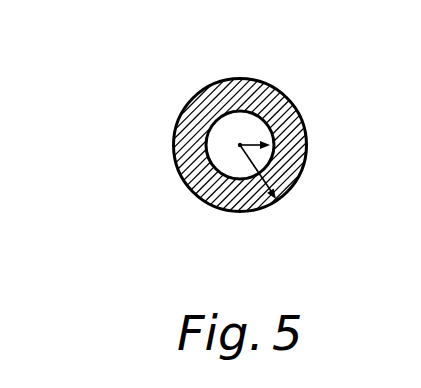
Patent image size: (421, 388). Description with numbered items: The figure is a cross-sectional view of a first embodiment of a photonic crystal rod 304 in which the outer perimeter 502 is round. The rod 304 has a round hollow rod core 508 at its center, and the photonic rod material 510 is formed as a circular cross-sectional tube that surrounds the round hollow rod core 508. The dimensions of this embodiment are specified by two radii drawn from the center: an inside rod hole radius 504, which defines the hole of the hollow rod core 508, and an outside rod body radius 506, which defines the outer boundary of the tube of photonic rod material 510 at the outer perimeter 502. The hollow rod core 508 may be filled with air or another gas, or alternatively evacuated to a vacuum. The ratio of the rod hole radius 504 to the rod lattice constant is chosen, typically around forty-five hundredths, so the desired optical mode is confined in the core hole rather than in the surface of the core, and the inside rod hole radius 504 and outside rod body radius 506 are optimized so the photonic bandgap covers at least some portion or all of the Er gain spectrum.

The photonic crystal rod 304 is at (117, 108).
The outer perimeter 502 is at (210, 82).
The inside rod hole radius 504 is at (288, 103).
The outside rod body radius 506 is at (268, 173).
The round hollow rod core 508 is at (217, 143).
The photonic rod material 510 is at (243, 198).